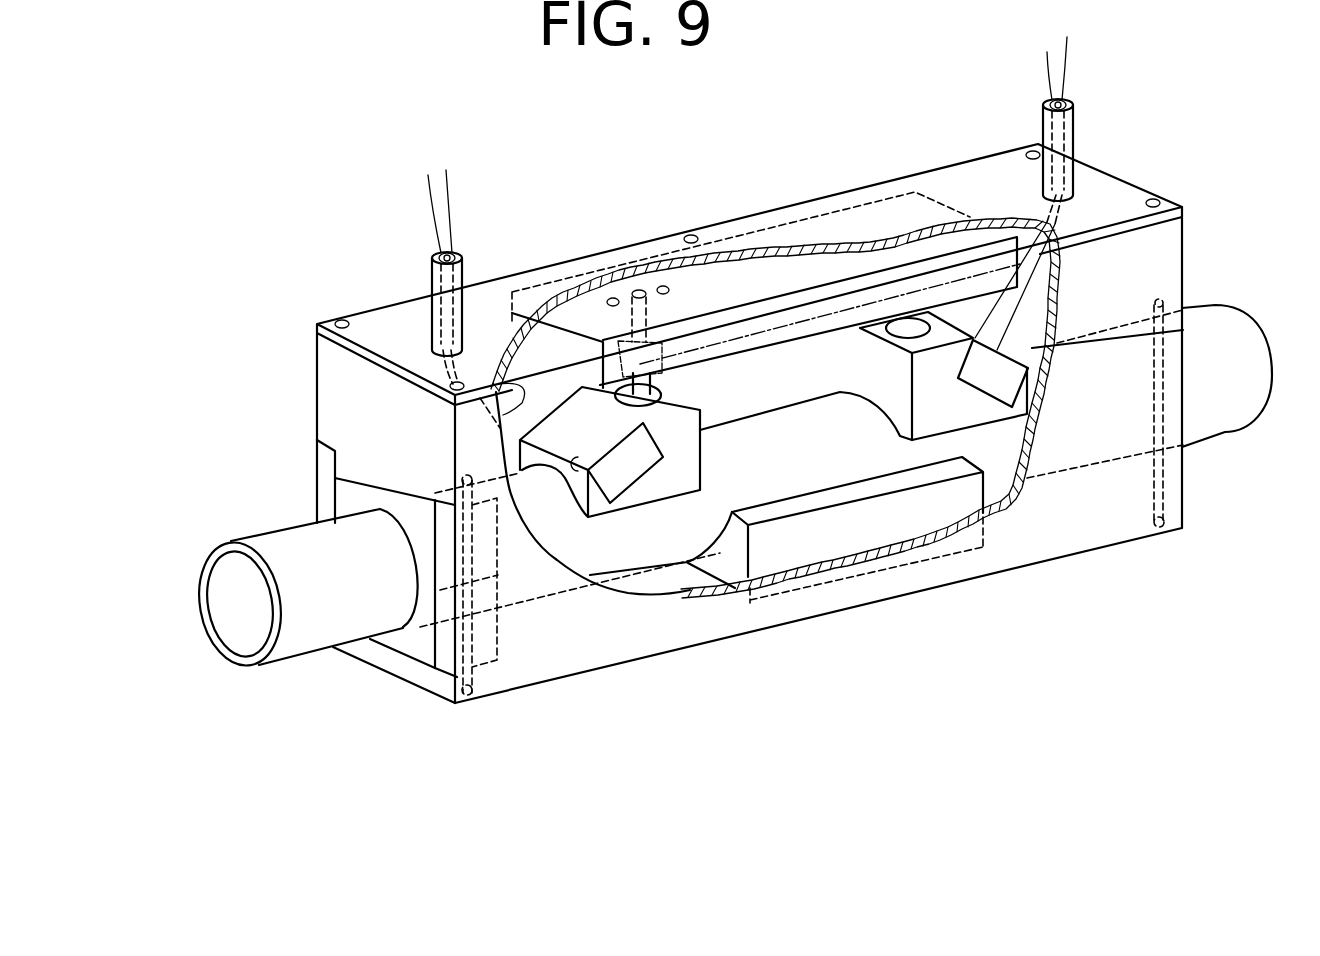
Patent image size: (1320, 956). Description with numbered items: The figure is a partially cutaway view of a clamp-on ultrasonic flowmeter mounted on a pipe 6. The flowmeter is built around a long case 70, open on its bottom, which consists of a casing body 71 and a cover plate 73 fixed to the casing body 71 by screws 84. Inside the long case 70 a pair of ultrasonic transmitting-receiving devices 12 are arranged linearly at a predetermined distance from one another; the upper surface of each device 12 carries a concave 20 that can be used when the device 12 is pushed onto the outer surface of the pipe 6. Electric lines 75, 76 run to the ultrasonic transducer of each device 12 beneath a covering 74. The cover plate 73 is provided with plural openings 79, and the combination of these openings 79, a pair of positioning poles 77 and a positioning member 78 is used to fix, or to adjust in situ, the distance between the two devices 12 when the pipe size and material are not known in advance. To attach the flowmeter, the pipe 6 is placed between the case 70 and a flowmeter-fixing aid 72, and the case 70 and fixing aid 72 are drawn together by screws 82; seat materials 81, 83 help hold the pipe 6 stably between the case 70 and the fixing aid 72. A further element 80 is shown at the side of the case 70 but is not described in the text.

The pipe 6 is at (302, 658).
The ultrasonic transmitting-receiving device 12 is at (631, 522).
The concave 20 is at (650, 402).
The long case 70 is at (322, 300).
The casing body 71 is at (325, 397).
The flowmeter-fixing aid 72 is at (380, 667).
The cover plate 73 is at (401, 316).
The covering 74 is at (604, 488).
The electric line 75 is at (451, 190).
The electric line 76 is at (568, 462).
The positioning pole 77 is at (627, 392).
The positioning member 78 is at (560, 333).
The opening 79 is at (661, 287).
The side plate 80 is at (345, 497).
The seat material 81 is at (425, 672).
The screw 82 is at (462, 698).
The seat material 83 is at (847, 537).
The screw 84 is at (1152, 197).